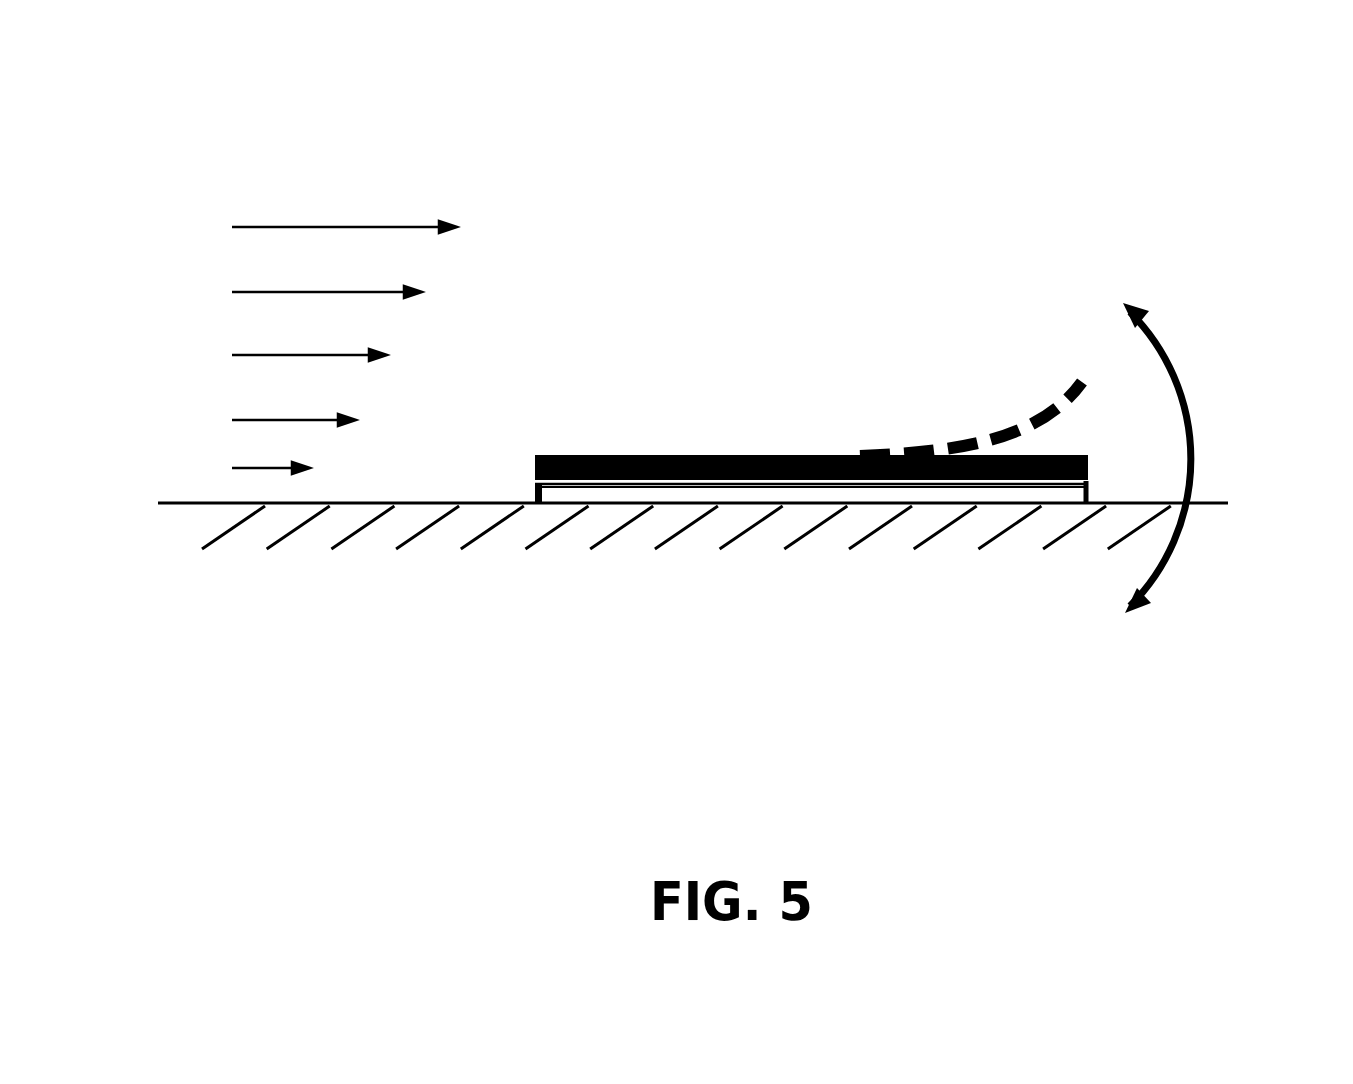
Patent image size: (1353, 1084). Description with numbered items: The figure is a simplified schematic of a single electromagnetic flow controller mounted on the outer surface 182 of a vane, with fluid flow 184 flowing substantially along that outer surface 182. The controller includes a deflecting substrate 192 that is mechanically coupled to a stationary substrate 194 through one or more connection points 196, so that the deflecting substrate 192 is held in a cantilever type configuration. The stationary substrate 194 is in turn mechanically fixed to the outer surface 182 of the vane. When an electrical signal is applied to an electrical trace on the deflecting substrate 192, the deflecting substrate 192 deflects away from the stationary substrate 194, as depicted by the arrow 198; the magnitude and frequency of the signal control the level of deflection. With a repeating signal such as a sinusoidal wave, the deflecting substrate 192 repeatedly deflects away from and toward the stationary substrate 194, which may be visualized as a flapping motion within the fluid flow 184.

The outer surface 182 is at (173, 503).
The fluid flow 184 is at (344, 335).
The deflecting substrate 192 is at (616, 445).
The stationary substrate 194 is at (530, 488).
The connection points 196 is at (562, 488).
The arrow 198 is at (1185, 393).